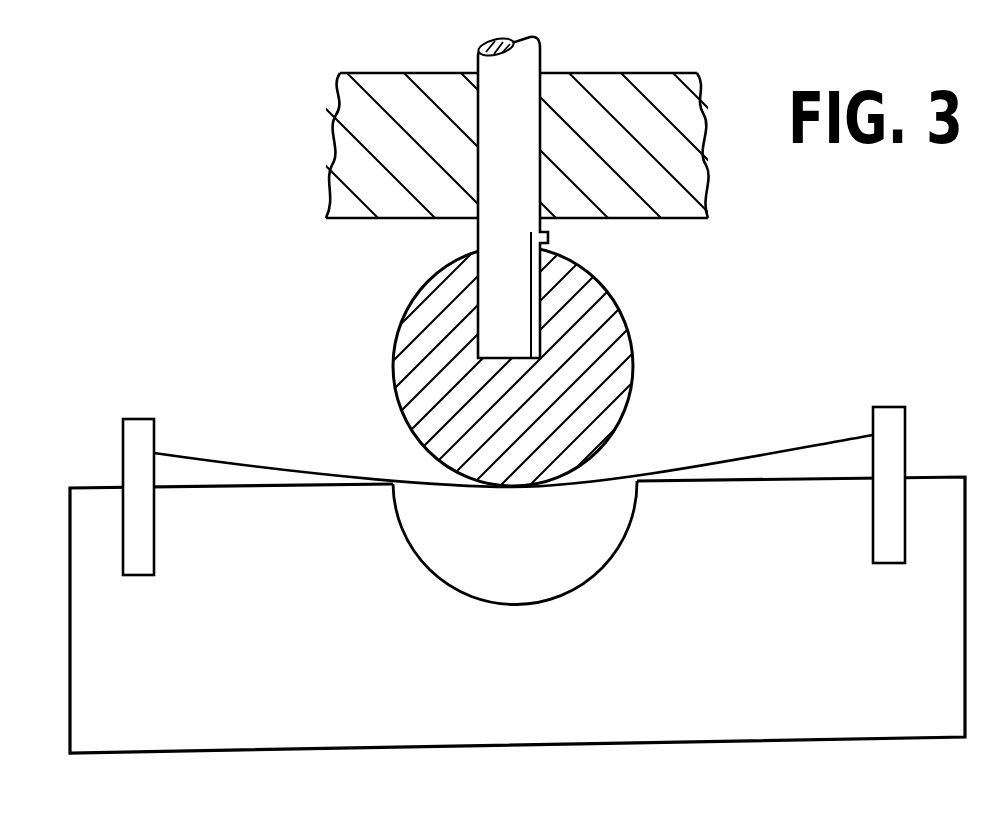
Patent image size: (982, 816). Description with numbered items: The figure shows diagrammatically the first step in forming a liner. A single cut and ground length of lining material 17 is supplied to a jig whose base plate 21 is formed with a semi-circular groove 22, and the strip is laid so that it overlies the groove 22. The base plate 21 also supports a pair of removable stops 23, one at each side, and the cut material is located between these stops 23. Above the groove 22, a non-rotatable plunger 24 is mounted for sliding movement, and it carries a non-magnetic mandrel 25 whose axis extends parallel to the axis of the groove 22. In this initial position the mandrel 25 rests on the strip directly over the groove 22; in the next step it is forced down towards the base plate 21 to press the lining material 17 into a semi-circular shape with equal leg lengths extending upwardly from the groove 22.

The cut length of lining material 17 is at (245, 460).
The base plate 21 is at (516, 674).
The semi-circular groove 22 is at (613, 550).
The removable stops 23 is at (147, 432).
The plunger 24 is at (505, 227).
The mandrel 25 is at (597, 335).